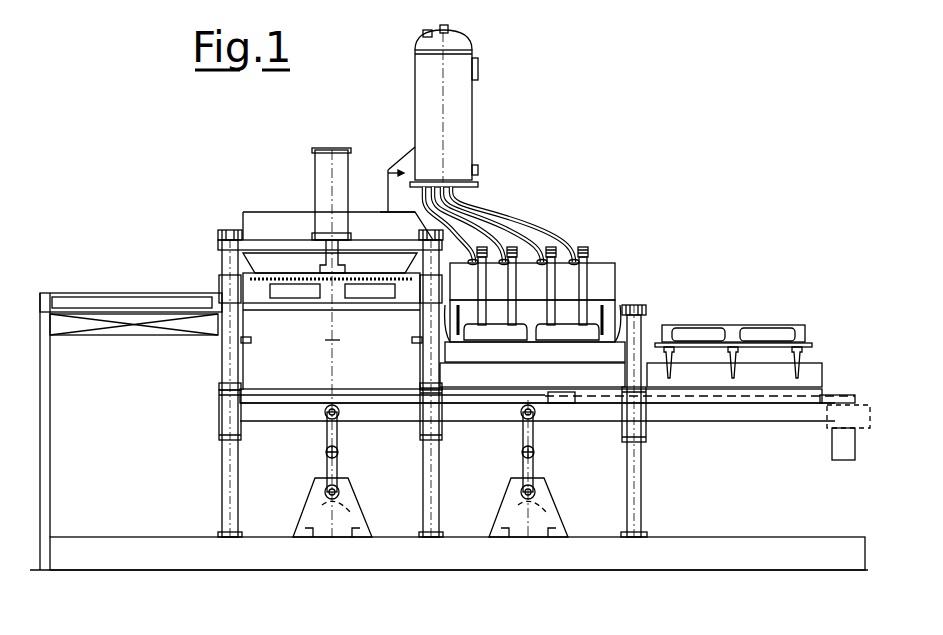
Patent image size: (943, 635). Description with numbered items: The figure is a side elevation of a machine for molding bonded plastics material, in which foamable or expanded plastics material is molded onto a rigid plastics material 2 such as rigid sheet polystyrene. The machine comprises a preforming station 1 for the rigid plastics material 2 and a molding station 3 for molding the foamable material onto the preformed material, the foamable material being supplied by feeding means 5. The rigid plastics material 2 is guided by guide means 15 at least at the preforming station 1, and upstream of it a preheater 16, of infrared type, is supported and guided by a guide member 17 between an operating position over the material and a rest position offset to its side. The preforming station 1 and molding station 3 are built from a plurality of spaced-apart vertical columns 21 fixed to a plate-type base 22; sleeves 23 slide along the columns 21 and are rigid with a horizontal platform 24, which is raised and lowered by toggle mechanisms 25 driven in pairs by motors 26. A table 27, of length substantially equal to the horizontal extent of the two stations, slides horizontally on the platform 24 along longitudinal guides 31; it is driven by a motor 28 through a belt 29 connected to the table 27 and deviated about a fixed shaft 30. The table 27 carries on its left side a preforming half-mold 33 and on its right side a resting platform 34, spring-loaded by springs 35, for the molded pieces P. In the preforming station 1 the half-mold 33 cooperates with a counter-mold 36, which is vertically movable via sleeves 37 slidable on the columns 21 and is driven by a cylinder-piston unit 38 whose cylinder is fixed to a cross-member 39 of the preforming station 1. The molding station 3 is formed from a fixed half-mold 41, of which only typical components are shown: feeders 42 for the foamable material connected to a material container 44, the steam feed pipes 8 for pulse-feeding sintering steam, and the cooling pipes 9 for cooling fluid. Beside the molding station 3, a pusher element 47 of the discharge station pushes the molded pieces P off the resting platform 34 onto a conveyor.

The preforming station 1 is at (205, 231).
The rigid plastics material 2 is at (245, 342).
The molding station 3 is at (637, 295).
The means for feeding the foamable plastics material 5 is at (528, 209).
The steam feed pipes 8 is at (499, 260).
The cooling pipes 9 is at (468, 260).
The guide means 15 is at (243, 342).
The preheater 16 is at (110, 327).
The guide member 17 is at (97, 300).
The vertical columns 21 is at (230, 488).
The plate-type base 22 is at (298, 560).
The sleeves 23 is at (230, 412).
The horizontal platform 24 is at (500, 406).
The toggle mechanisms 25 is at (320, 459).
The motors 26 is at (307, 507).
The table 27 is at (592, 372).
The motor 28 is at (841, 448).
The belt 29 is at (830, 398).
The fixed shaft 30 is at (572, 407).
The longitudinal guides 31 is at (307, 390).
The preforming half-mold 33 is at (485, 353).
The resting platform 34 is at (805, 342).
The springs 35 is at (722, 357).
The counter-mold 36 is at (265, 270).
The sleeves 37 is at (222, 287).
The cylinder-piston unit 38 is at (316, 178).
The cross-member 39 is at (275, 237).
The fixed half-mold 41 is at (610, 280).
The feeders 42 is at (586, 262).
The material container 44 is at (452, 113).
The pusher element 47 is at (665, 343).
The molded pieces P is at (750, 338).